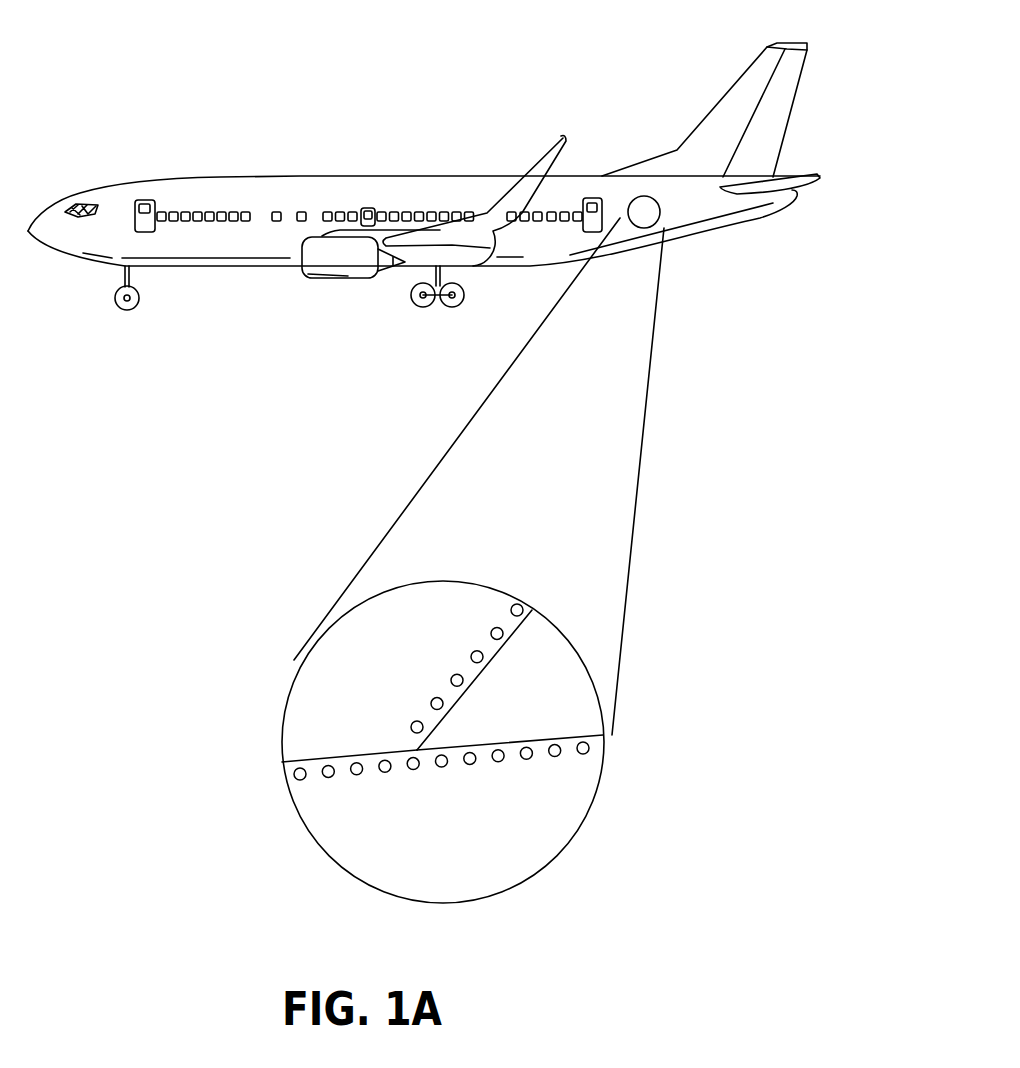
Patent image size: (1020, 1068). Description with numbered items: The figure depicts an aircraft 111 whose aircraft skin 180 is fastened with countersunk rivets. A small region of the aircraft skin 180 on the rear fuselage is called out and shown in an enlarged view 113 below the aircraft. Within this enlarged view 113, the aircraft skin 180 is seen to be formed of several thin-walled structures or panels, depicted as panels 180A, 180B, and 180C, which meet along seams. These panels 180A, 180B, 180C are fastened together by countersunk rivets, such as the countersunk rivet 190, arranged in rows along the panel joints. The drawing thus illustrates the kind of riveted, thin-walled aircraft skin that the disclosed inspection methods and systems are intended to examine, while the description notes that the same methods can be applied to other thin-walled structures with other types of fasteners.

The aircraft 111 is at (121, 102).
The aircraft skin 180 is at (645, 198).
The enlarged view 113 is at (628, 568).
The panel 180A is at (572, 705).
The panel 180B is at (557, 808).
The panel 180C is at (305, 698).
The countersunk rivet 190 is at (307, 783).